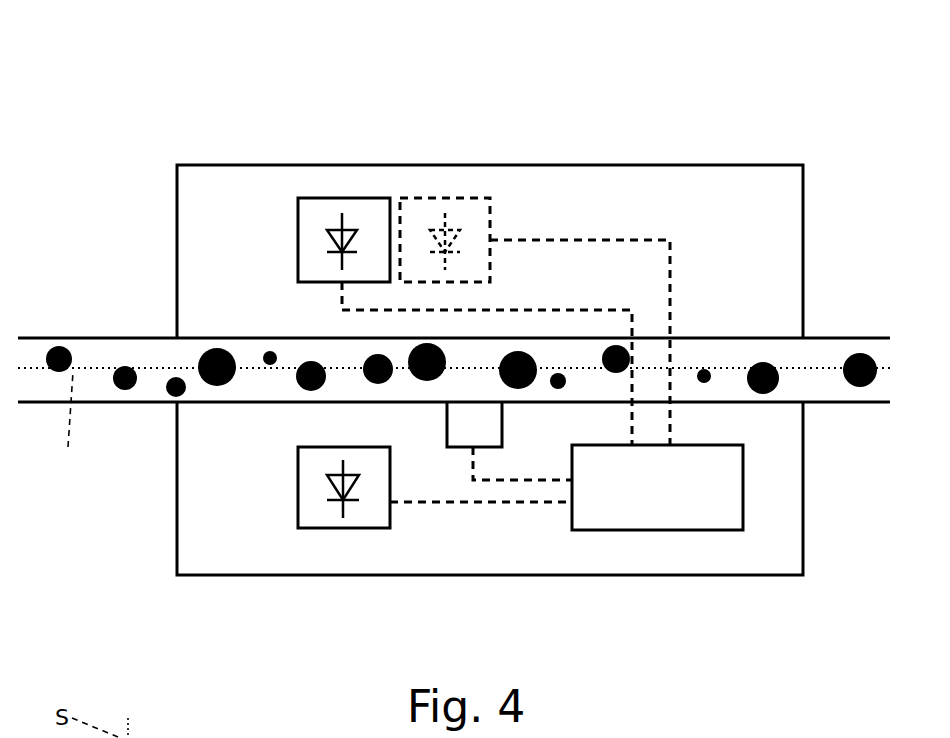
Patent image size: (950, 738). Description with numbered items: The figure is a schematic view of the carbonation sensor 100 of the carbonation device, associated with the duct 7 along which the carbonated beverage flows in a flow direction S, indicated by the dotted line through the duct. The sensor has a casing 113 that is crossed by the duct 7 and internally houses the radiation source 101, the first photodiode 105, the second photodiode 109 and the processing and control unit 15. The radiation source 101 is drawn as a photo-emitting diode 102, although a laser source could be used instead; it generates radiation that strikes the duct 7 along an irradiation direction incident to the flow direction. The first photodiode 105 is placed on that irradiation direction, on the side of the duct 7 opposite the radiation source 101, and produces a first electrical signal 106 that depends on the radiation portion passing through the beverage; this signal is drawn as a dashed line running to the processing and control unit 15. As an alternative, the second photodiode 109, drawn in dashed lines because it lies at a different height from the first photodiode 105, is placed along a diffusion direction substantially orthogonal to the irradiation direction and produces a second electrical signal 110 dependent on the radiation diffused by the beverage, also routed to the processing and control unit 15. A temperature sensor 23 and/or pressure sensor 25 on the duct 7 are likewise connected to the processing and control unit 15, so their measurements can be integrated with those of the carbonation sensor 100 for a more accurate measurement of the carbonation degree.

The carbonation sensor 100 is at (158, 103).
The casing 113 is at (177, 220).
The duct 7 is at (83, 338).
The first photodiode 105 is at (335, 197).
The second photodiode 109 is at (438, 197).
The first electrical signal 106 is at (522, 306).
The second electrical signal 110 is at (618, 232).
The radiation source 101 is at (246, 534).
The photo-emitting diode 102 is at (328, 492).
The temperature sensor 23 is at (451, 516).
The pressure sensor 25 is at (452, 447).
The processing and control unit 15 is at (650, 531).